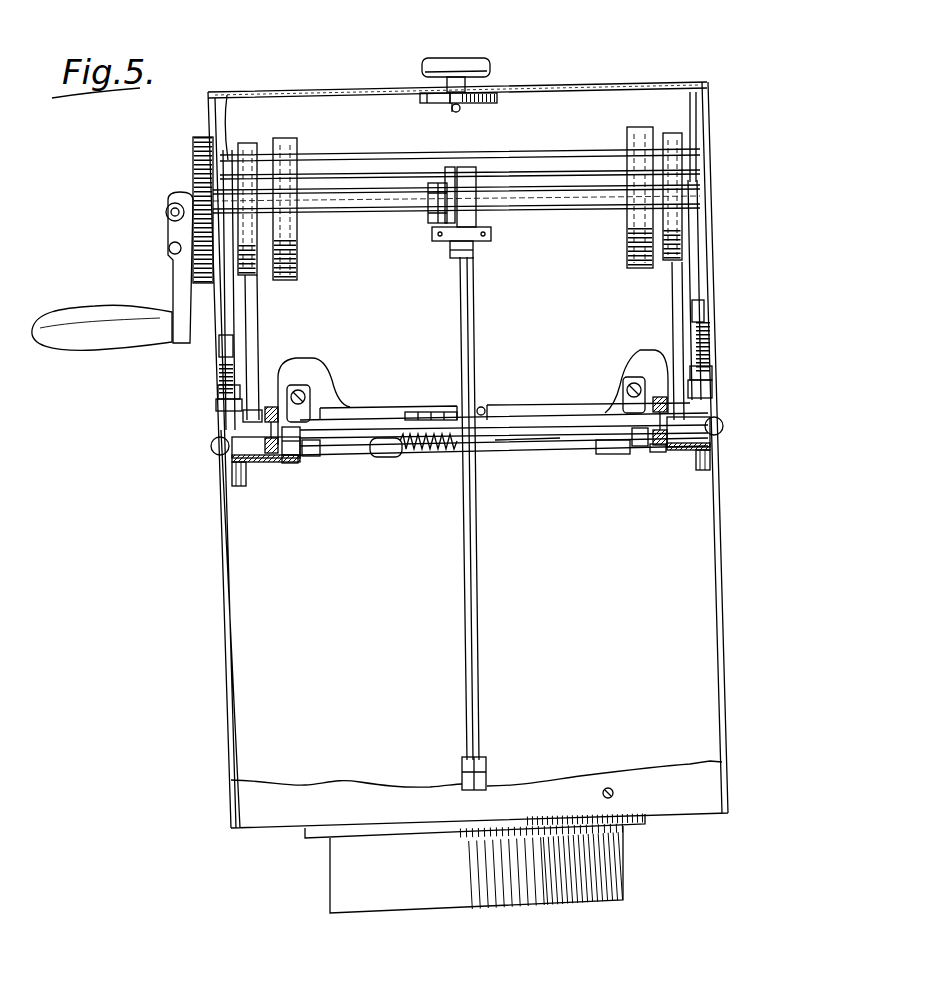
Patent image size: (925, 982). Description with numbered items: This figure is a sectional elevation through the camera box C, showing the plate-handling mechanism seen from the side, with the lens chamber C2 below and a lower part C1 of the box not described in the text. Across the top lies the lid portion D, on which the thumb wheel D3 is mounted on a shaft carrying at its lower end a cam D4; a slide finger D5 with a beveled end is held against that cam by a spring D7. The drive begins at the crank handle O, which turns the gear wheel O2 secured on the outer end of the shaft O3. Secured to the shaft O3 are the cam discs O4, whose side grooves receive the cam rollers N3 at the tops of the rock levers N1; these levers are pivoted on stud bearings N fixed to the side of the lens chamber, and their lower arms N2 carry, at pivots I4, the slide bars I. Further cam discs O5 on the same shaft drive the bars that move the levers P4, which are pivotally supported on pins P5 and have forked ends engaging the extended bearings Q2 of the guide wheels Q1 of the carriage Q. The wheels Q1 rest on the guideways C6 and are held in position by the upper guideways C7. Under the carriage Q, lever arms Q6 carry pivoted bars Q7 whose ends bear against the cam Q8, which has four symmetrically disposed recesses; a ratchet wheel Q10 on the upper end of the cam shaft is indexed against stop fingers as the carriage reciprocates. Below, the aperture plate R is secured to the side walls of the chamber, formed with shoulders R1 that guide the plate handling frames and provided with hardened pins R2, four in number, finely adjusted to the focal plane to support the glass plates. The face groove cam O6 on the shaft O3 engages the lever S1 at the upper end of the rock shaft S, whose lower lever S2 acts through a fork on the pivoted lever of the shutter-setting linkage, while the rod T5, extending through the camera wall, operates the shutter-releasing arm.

The camera box C is at (722, 521).
The cylinder C1 is at (476, 869).
The lens chamber C2 is at (475, 702).
The guideways C6 is at (657, 447).
The upper guideways C7 is at (640, 358).
The lid portion D is at (583, 88).
The thumb wheel D3 is at (485, 62).
The cam D4 is at (493, 99).
The slide finger D5 is at (440, 102).
The spring D7 is at (459, 109).
The slide bars I is at (710, 393).
The pivot I4 is at (715, 369).
The stud bearings N is at (706, 303).
The rock lever arm N1 is at (696, 273).
The lower arms N2 is at (700, 345).
The cam rollers N3 is at (692, 186).
The crank handle O is at (170, 286).
The gear wheel O2 is at (196, 143).
The shaft O3 is at (379, 209).
The cam discs O4 is at (677, 133).
The cam discs O5 is at (637, 128).
The face groove cam O6 is at (430, 224).
The levers P4 is at (672, 290).
The pins P5 is at (385, 160).
The carriage Q is at (533, 422).
The guide wheels Q1 is at (645, 446).
The extended bearings Q2 is at (717, 425).
The lever arms Q6 is at (607, 453).
The bars Q7 is at (513, 438).
The cam Q8 is at (430, 452).
The ratchet wheel Q10 is at (415, 412).
The aperture plate R is at (690, 452).
The shoulders R1 is at (670, 452).
The hardened pins R2 is at (650, 450).
The rock shaft S is at (471, 324).
The lever S1 is at (472, 241).
The lever S2 is at (487, 761).
The rod T5 is at (611, 788).